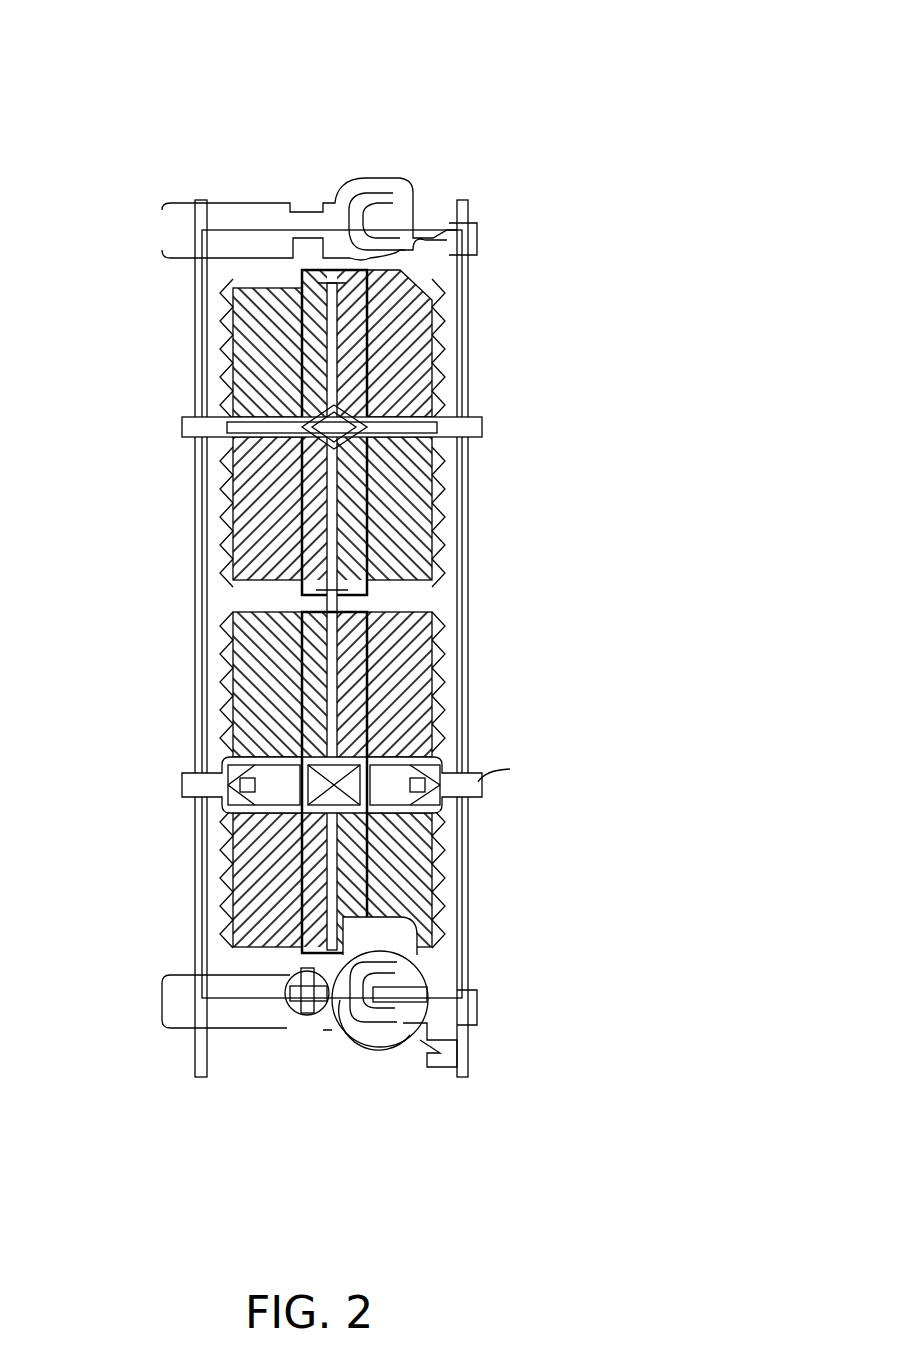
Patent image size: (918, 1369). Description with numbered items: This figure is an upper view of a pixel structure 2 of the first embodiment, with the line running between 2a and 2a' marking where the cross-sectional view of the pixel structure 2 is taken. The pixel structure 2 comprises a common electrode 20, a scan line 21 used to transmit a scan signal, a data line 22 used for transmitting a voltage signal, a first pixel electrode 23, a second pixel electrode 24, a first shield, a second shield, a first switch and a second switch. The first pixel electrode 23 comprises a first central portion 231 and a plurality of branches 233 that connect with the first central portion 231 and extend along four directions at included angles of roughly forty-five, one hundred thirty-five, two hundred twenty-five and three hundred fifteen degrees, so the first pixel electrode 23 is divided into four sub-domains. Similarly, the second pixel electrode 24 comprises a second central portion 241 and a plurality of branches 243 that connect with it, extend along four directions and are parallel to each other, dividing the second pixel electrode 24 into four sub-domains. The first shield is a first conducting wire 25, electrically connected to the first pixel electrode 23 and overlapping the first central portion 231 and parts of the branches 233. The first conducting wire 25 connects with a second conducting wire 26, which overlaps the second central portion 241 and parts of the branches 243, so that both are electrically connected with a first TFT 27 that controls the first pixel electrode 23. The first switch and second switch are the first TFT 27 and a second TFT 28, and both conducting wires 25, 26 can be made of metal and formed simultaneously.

The pixel structure 2 is at (462, 78).
The section line end 2a is at (232, 271).
The section line end 2a' is at (203, 594).
The common electrode 20 is at (182, 427).
The scan line 21 is at (473, 1000).
The data line 22 is at (470, 545).
The first pixel electrode 23 is at (447, 590).
The second pixel electrode 24 is at (211, 970).
The first conducting wire 25 is at (337, 317).
The second conducting wire 26 is at (340, 897).
The first TFT 27 is at (295, 1027).
The second TFT 28 is at (378, 1048).
The first central portion 231 is at (367, 377).
The branches 233 is at (408, 470).
The second central portion 241 is at (367, 840).
The branches 243 is at (400, 745).